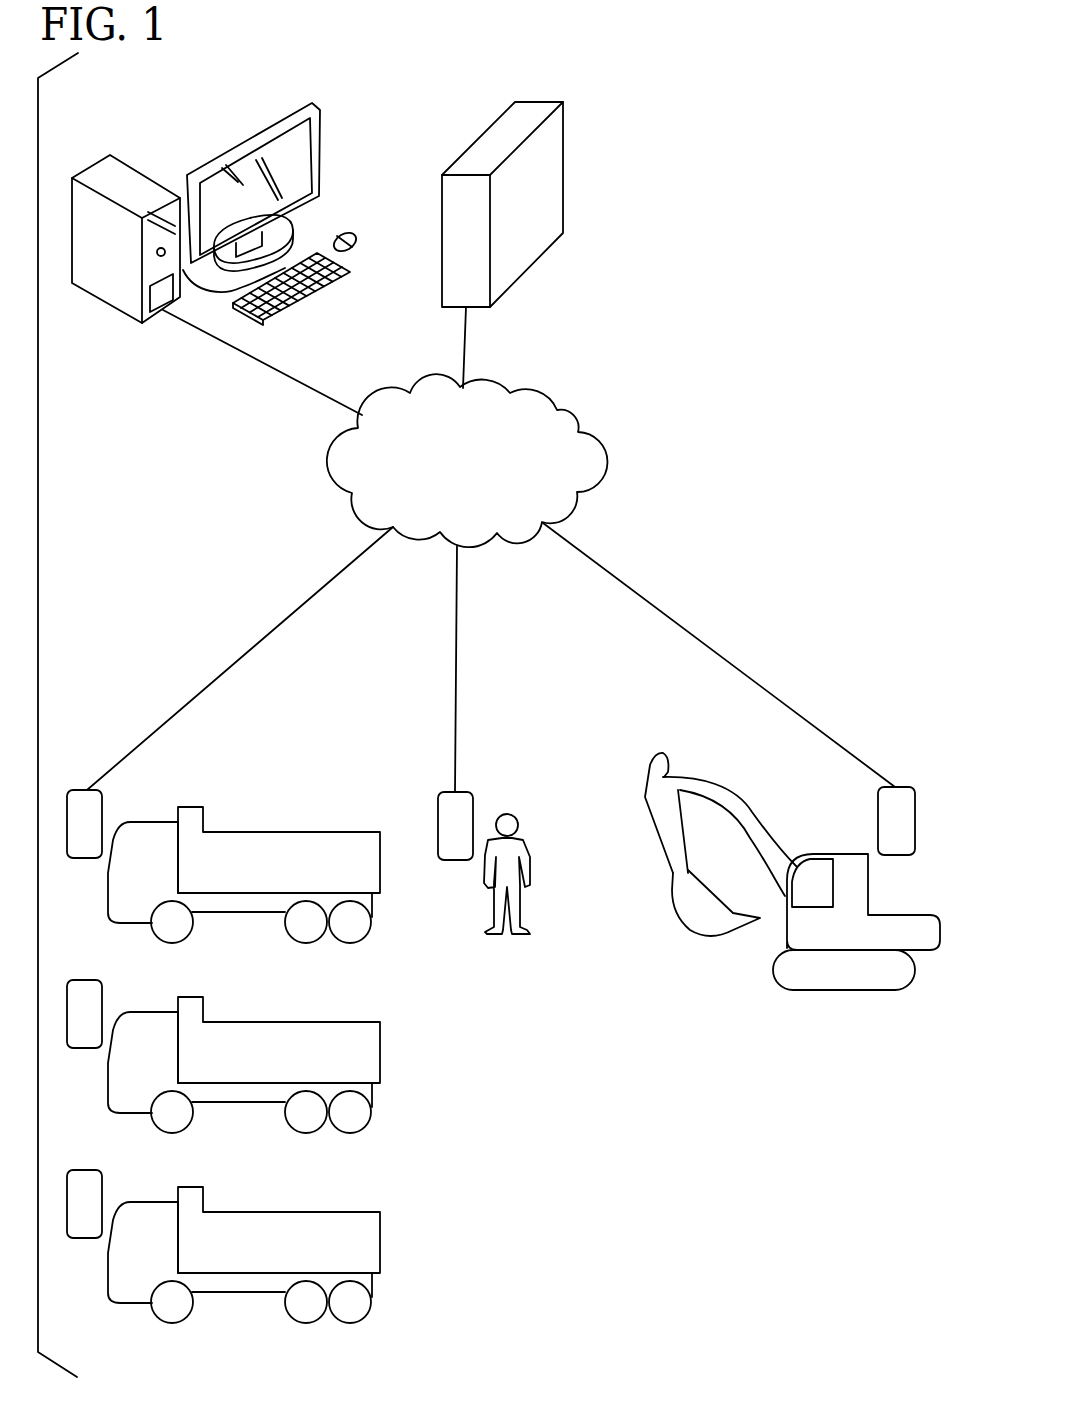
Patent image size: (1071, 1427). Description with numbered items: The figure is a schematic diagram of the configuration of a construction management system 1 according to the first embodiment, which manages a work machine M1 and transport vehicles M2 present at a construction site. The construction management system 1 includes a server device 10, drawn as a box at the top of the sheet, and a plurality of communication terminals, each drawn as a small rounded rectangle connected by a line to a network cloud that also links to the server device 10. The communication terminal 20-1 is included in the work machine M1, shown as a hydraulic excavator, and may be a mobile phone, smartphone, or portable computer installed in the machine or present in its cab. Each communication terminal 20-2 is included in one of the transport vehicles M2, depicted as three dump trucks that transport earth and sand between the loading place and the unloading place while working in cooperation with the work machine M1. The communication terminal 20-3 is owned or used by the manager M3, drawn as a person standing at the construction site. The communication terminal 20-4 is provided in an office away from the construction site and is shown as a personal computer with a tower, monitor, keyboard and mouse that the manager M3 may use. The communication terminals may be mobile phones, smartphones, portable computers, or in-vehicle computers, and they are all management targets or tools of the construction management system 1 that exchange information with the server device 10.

The construction management system 1 is at (786, 153).
The server device 10 is at (563, 165).
The communication terminal 20-1 is at (900, 786).
The communication terminal 20-2 is at (102, 800).
The communication terminal 20-3 is at (473, 800).
The communication terminal 20-4 is at (322, 128).
The work machine M1 is at (844, 990).
The transport vehicle M2 is at (125, 915).
The manager M3 is at (528, 860).